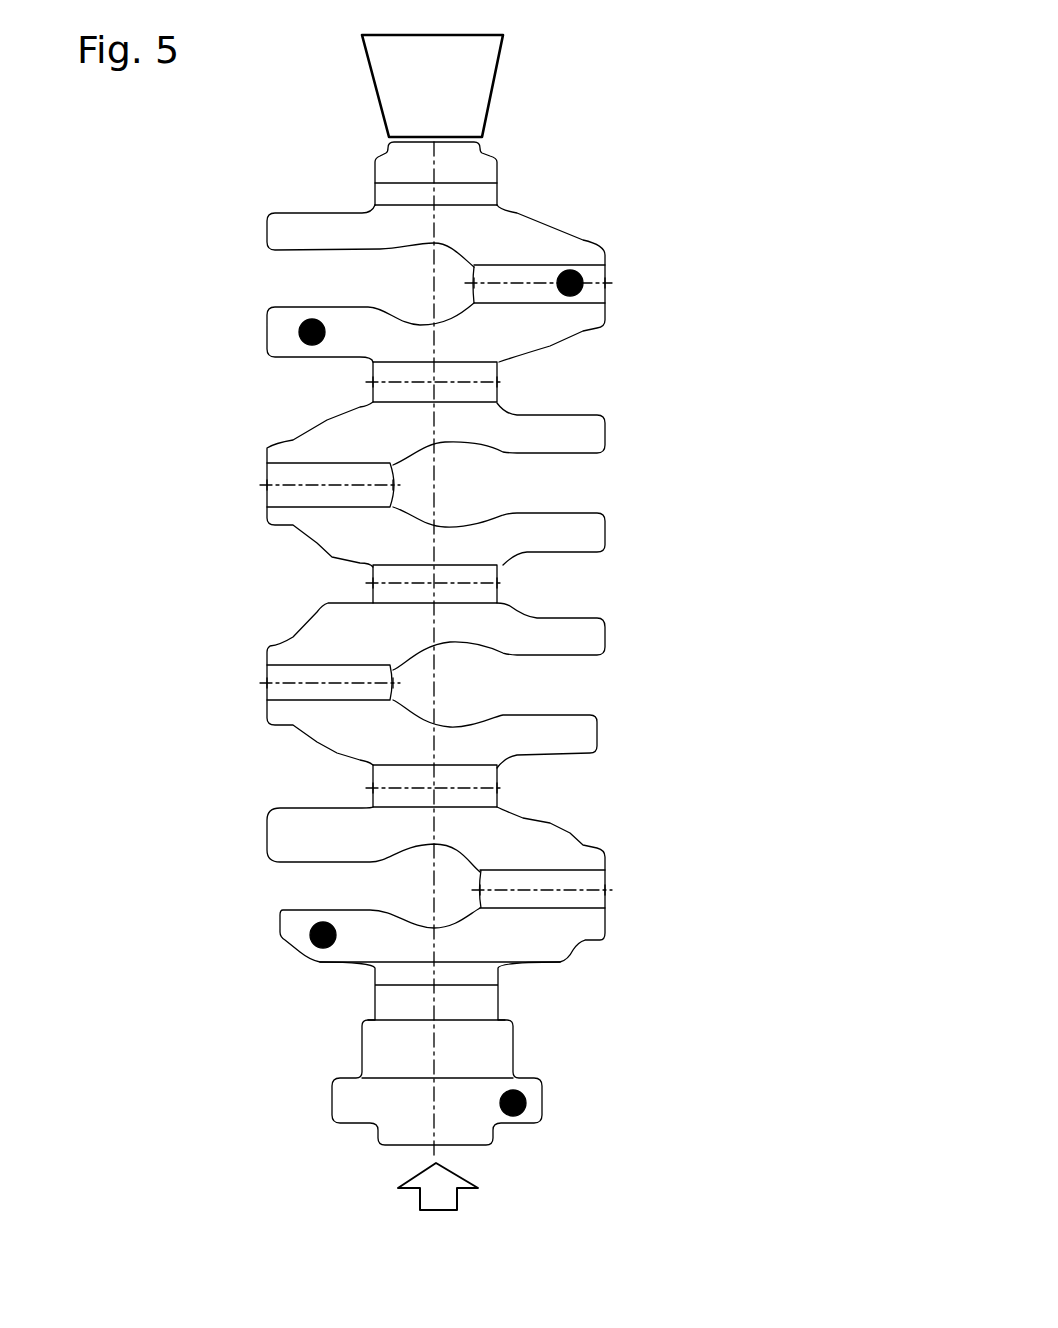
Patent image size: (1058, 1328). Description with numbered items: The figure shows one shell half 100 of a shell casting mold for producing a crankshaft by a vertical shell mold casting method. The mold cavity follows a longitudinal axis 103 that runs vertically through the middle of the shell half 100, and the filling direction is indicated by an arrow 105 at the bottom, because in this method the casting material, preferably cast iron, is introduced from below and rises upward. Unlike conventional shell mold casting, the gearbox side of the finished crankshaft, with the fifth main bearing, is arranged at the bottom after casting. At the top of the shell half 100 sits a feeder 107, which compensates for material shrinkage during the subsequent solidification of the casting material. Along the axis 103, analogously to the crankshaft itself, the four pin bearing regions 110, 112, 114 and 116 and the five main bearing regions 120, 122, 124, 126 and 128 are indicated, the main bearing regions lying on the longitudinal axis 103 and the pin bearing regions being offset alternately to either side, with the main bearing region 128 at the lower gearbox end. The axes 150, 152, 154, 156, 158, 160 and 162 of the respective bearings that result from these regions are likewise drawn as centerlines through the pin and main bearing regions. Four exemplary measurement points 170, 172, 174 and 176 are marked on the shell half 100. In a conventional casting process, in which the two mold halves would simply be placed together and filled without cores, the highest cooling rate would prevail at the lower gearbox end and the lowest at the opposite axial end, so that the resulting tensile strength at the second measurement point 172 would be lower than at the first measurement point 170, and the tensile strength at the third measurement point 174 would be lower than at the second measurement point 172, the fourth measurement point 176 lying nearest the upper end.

The shell half 100 is at (754, 31).
The longitudinal axis 103 is at (428, 174).
The arrow 105 is at (460, 1199).
The feeder 107 is at (388, 127).
The pin bearing region 110 is at (605, 296).
The pin bearing region 112 is at (265, 491).
The pin bearing region 114 is at (267, 668).
The pin bearing region 116 is at (605, 882).
The main bearing region 120 is at (499, 190).
The main bearing region 122 is at (478, 395).
The main bearing region 124 is at (502, 595).
The main bearing region 126 is at (498, 778).
The main bearing region 128 is at (498, 1002).
The axis 150 is at (503, 280).
The axis 152 is at (447, 382).
The axis 154 is at (288, 483).
The axis 156 is at (470, 582).
The axis 158 is at (315, 683).
The axis 160 is at (472, 788).
The axis 162 is at (562, 890).
The measurement point 170 is at (516, 1100).
The measurement point 172 is at (320, 934).
The measurement point 174 is at (308, 330).
The measurement point 176 is at (580, 280).